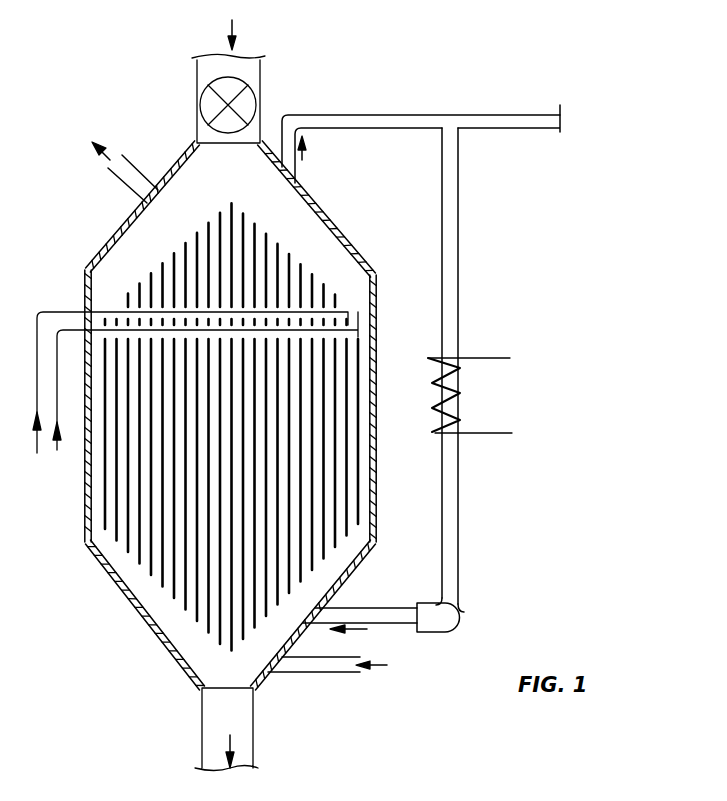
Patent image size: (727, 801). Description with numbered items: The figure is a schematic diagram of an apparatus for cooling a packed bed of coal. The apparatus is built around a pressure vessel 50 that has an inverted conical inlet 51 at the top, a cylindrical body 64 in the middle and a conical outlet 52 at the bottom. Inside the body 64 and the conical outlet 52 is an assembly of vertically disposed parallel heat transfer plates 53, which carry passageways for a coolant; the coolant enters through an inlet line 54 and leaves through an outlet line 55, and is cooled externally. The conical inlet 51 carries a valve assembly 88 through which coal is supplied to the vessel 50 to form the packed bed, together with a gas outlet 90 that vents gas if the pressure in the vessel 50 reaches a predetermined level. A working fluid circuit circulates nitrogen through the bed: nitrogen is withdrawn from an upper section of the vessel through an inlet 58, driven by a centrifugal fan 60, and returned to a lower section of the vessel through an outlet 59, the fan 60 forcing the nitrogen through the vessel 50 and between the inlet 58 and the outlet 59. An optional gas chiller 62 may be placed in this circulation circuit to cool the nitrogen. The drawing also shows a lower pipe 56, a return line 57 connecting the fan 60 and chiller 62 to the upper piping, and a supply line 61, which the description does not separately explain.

The pressure vessel 50 is at (231, 395).
The inverted conical inlet 51 is at (342, 232).
The conical outlet 52 is at (134, 608).
The heat transfer plates 53 is at (338, 462).
The inlet line 54 is at (52, 306).
The outlet line 55 is at (58, 403).
The lower inlet pipe 56 is at (320, 663).
The return line 57 is at (450, 294).
The inlet 58 is at (333, 115).
The outlet 59 is at (378, 611).
The centrifugal fan 60 is at (460, 612).
The gas supply line 61 is at (520, 115).
The gas chiller 62 is at (497, 410).
The cylindrical body 64 is at (374, 498).
The valve assembly 88 is at (207, 95).
The gas outlet 90 is at (120, 183).